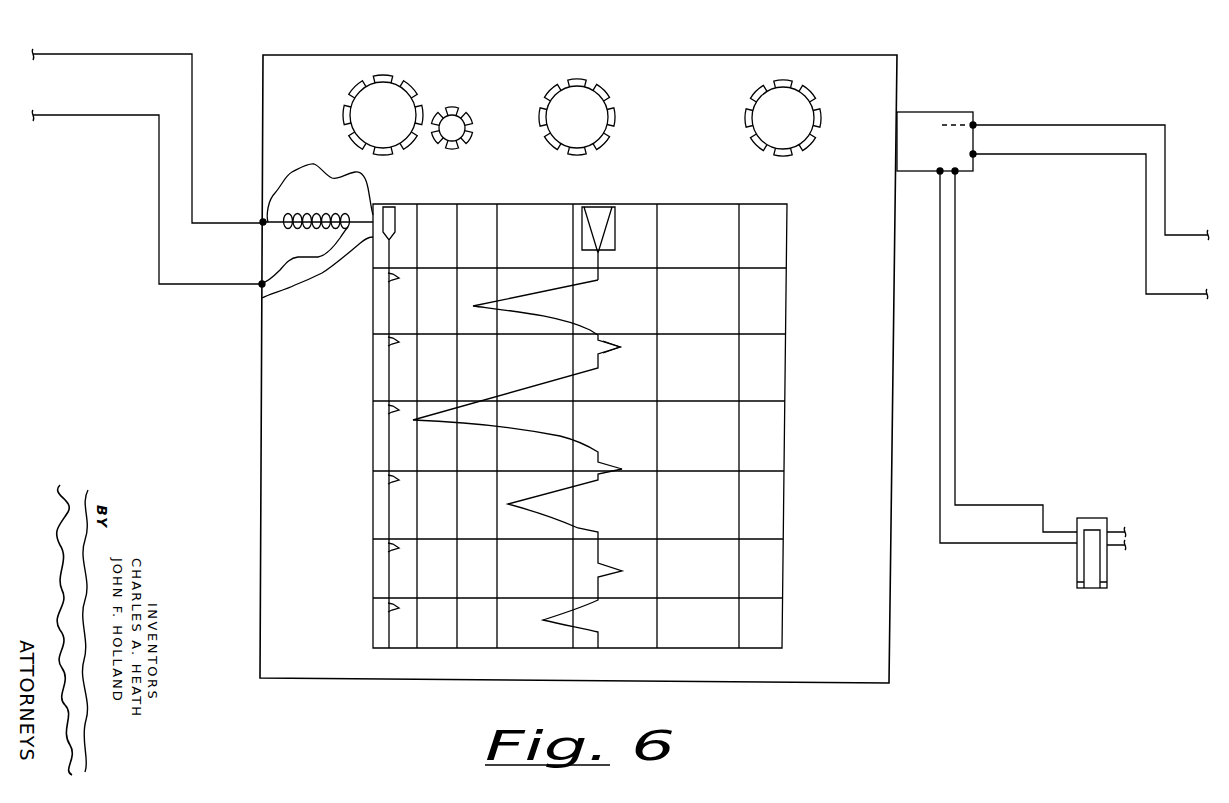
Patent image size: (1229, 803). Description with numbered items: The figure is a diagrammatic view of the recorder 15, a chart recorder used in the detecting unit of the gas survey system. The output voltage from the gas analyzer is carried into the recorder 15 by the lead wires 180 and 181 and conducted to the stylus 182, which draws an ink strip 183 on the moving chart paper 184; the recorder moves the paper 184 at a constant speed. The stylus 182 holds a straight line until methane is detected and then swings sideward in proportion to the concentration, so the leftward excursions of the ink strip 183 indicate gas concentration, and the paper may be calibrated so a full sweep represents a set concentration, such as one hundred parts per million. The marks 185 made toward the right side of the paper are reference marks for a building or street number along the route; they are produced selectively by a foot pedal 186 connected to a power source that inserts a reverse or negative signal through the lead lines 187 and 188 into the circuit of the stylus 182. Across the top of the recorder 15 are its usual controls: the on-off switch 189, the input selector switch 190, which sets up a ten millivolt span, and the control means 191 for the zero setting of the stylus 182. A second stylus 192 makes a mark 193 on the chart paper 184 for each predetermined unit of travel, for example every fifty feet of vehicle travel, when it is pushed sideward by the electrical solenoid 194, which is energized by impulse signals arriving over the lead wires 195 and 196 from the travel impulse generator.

The recorder 15 is at (805, 684).
The lead wire 180 is at (1057, 125).
The lead wire 181 is at (1062, 157).
The stylus 182 is at (600, 215).
The ink strip 183 is at (478, 422).
The chart paper 184 is at (772, 451).
The marks 185 is at (610, 350).
The foot pedal 186 is at (1090, 568).
The lead line 187 is at (957, 308).
The lead line 188 is at (938, 343).
The on-off switch 189 is at (383, 88).
The input selector switch 190 is at (592, 112).
The control means 191 is at (803, 115).
The second stylus 192 is at (390, 212).
The mark 193 is at (400, 278).
The electrical solenoid 194 is at (315, 213).
The lead wire 195 is at (113, 55).
The lead wire 196 is at (100, 115).